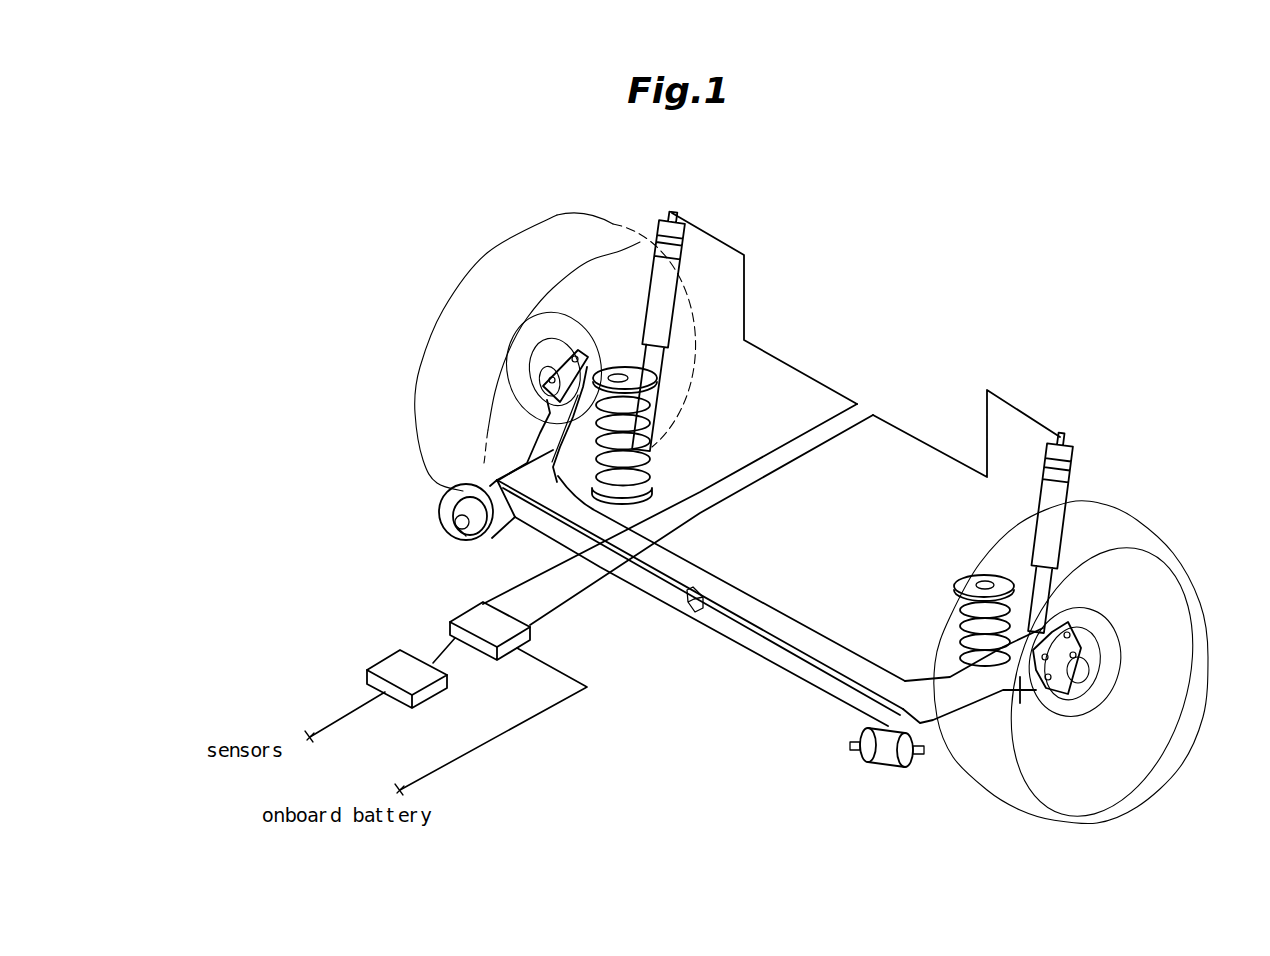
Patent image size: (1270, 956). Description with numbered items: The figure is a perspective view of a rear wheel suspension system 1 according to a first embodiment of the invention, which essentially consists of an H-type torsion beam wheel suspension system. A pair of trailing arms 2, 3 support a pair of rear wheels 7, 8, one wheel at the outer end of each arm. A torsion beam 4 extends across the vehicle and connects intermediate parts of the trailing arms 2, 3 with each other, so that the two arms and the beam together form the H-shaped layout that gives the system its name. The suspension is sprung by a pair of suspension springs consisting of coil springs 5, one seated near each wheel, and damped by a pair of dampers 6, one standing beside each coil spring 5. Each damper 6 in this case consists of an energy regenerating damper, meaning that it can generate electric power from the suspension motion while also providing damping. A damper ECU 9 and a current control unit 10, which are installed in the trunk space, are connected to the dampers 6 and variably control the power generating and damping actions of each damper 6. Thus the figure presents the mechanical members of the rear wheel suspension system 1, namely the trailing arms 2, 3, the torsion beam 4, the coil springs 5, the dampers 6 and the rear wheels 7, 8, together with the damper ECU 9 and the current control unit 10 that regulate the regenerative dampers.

The rear wheel suspension system 1 is at (1048, 299).
The trailing arm 2 is at (930, 722).
The trailing arm 3 is at (470, 482).
The torsion beam 4 is at (687, 618).
The coil spring 5 is at (650, 452).
The damper 6 is at (647, 273).
The rear wheel 7 is at (1148, 760).
The rear wheel 8 is at (478, 270).
The damper ECU 9 is at (367, 670).
The current control unit 10 is at (450, 623).